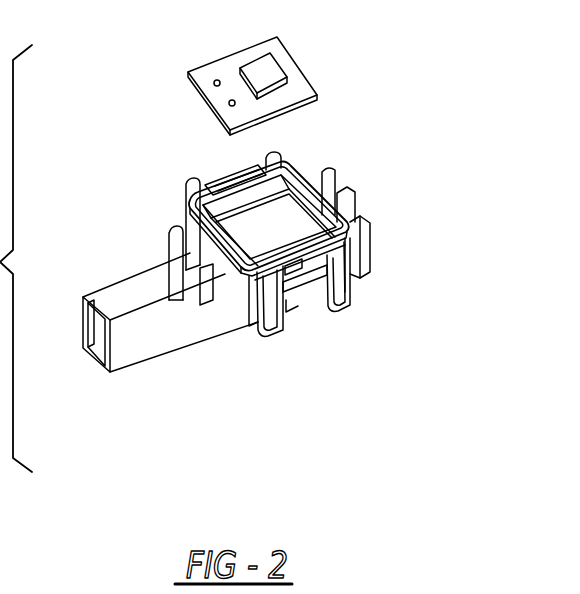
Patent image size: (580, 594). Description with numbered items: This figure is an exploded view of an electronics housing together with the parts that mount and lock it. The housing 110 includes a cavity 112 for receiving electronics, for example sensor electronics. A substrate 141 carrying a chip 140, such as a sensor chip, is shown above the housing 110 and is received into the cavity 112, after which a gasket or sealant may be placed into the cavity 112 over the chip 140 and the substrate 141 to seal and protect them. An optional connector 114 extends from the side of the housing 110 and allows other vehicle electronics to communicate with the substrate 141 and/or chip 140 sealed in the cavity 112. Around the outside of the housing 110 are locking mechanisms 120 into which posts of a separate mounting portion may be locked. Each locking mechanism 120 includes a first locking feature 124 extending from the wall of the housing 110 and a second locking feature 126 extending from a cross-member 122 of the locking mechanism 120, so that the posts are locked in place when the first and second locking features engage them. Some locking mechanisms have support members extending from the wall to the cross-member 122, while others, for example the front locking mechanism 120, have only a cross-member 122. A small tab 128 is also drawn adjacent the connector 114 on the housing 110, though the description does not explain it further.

The housing 110 is at (243, 314).
The cavity 112 is at (296, 228).
The connector 114 is at (140, 325).
The locking mechanism 120 is at (160, 230).
The cross-member 122 is at (226, 172).
The first locking feature 124 is at (243, 308).
The second locking feature 126 is at (247, 166).
The tab 128 is at (197, 300).
The chip 140 is at (287, 58).
The substrate 141 is at (200, 72).